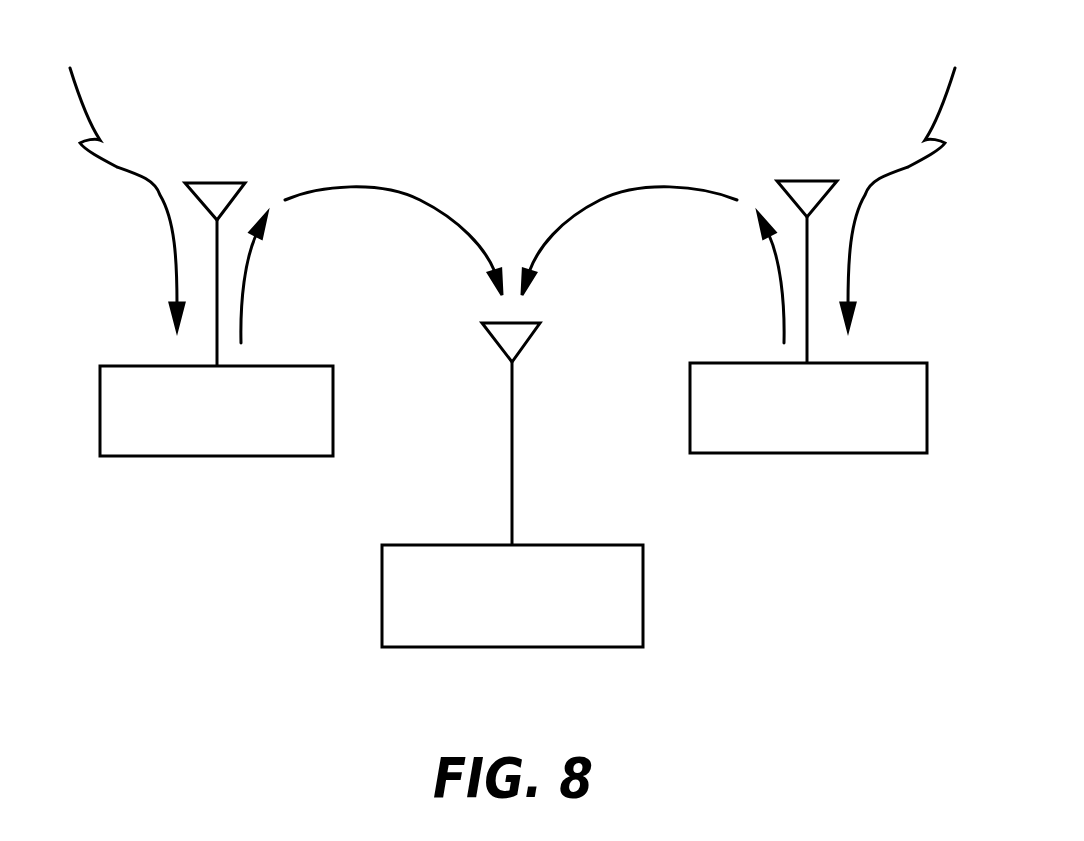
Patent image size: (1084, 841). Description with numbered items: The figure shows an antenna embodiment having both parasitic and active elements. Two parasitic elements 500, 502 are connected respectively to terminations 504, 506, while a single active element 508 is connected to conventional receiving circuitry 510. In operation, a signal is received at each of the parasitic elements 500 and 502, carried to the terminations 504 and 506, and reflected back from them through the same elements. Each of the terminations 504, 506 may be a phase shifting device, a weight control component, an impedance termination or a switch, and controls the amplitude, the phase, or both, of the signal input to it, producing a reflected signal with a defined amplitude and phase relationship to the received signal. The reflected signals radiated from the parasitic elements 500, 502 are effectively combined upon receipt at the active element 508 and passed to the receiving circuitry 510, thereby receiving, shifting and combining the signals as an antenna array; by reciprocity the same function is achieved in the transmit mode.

The parasitic element 500 is at (217, 182).
The parasitic element 502 is at (805, 180).
The termination 504 is at (197, 456).
The termination 506 is at (832, 453).
The active element 508 is at (527, 342).
The receiving circuitry 510 is at (548, 647).